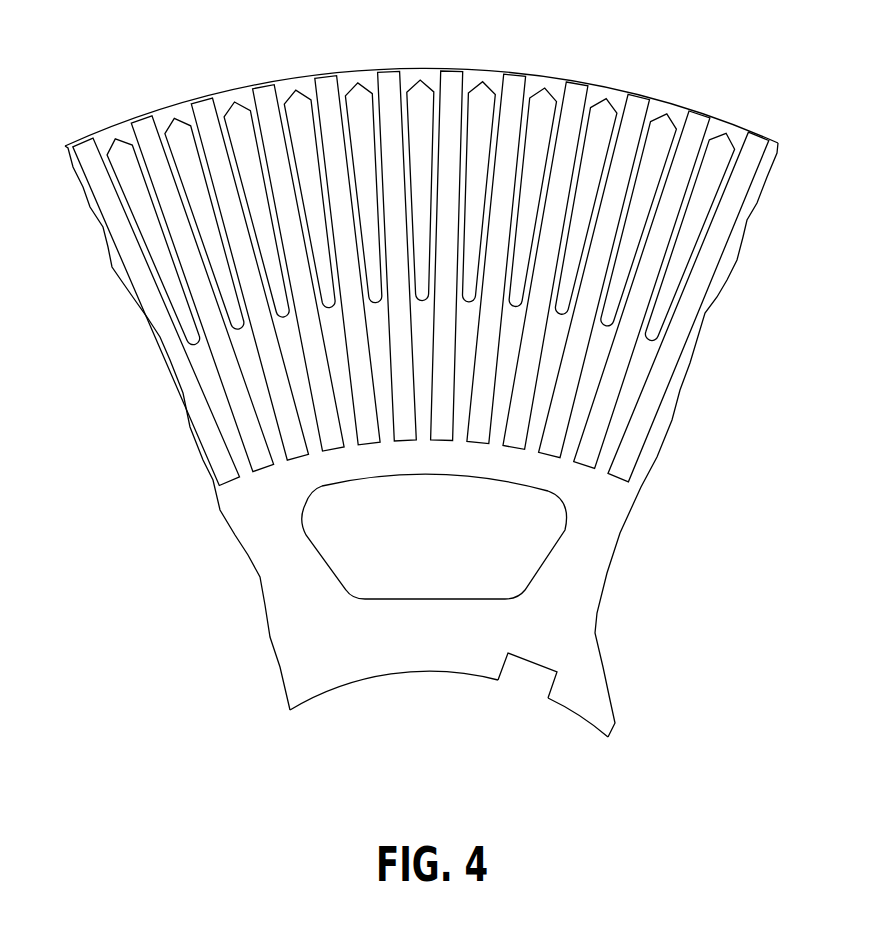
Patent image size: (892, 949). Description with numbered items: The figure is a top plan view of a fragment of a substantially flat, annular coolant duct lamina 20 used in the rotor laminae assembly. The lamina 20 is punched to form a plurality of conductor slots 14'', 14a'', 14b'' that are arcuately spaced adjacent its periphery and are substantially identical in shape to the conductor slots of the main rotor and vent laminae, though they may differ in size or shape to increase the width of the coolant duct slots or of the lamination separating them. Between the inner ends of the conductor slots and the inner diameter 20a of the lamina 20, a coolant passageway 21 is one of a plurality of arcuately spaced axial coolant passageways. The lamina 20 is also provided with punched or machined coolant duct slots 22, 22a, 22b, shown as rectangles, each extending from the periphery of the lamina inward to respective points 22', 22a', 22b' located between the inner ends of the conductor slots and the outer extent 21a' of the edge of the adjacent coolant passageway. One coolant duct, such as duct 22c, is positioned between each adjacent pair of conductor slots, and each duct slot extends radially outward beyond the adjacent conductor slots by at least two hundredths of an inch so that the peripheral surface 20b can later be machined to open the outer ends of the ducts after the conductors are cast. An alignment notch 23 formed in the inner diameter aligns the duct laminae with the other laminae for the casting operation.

The duct lamina 20 is at (421, 375).
The inner diameter 20a is at (449, 678).
The peripheral surface 20b is at (700, 110).
The coolant passageway 21 is at (427, 536).
The outer extent of coolant passageway edge 21a' is at (435, 515).
The coolant duct slot 22 is at (450, 251).
The coolant duct slot 22a is at (507, 254).
The coolant duct slot 22b is at (560, 263).
The coolant duct 22c is at (202, 102).
The inner point of duct slot 22' is at (443, 276).
The inner point of duct slot 22a' is at (496, 279).
The inner point of duct slot 22b' is at (545, 286).
The alignment notch 23 is at (538, 662).
The conductor slot 14'' is at (202, 192).
The conductor slot 14a'' is at (262, 184).
The conductor slot 14b'' is at (321, 169).